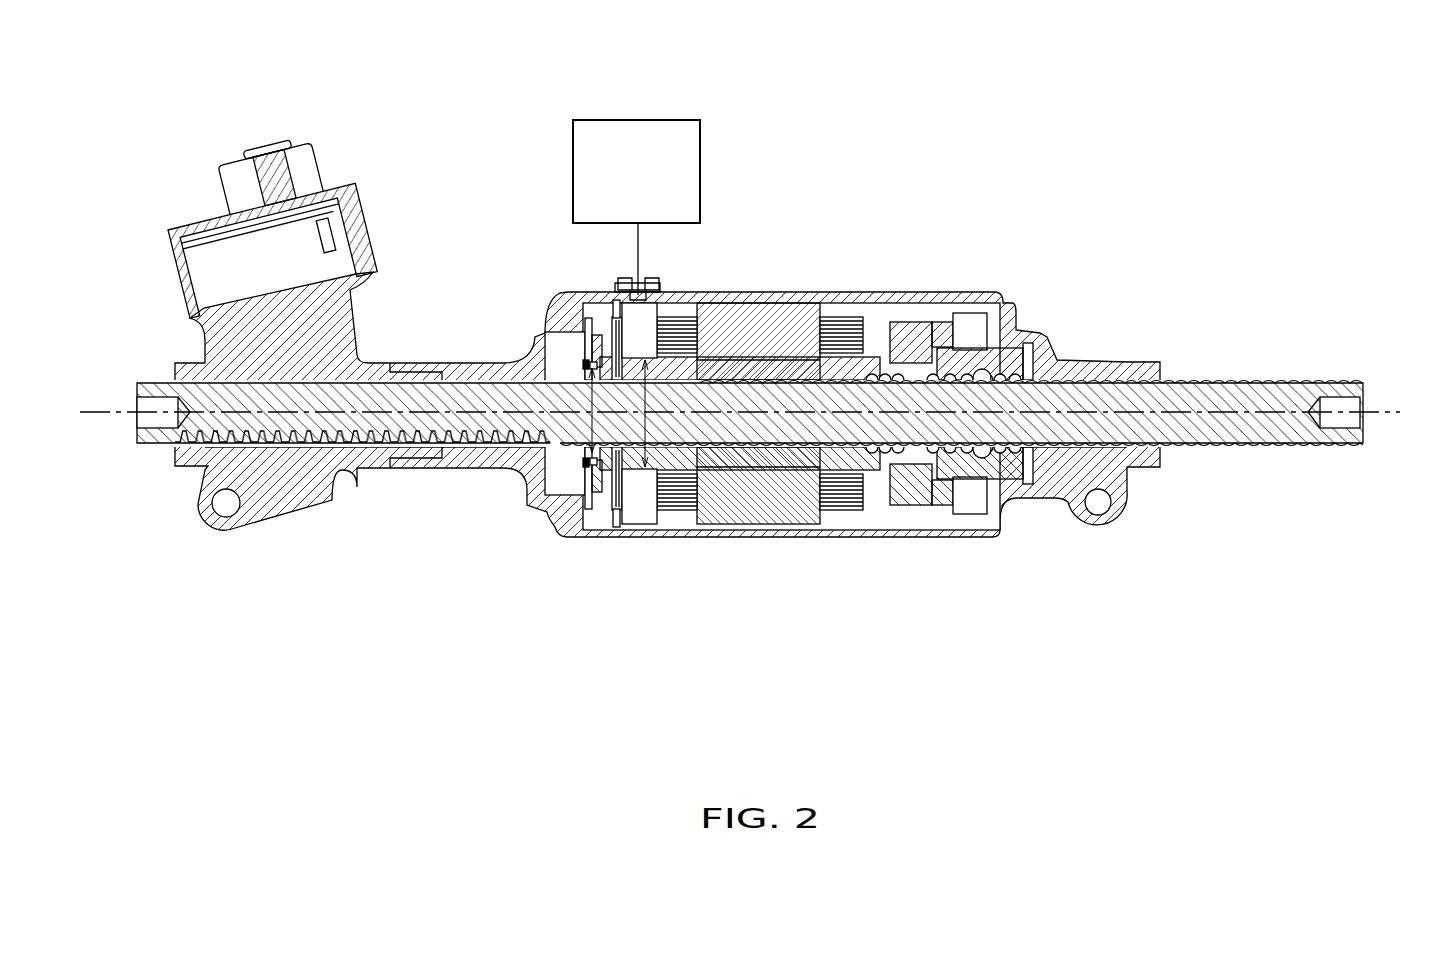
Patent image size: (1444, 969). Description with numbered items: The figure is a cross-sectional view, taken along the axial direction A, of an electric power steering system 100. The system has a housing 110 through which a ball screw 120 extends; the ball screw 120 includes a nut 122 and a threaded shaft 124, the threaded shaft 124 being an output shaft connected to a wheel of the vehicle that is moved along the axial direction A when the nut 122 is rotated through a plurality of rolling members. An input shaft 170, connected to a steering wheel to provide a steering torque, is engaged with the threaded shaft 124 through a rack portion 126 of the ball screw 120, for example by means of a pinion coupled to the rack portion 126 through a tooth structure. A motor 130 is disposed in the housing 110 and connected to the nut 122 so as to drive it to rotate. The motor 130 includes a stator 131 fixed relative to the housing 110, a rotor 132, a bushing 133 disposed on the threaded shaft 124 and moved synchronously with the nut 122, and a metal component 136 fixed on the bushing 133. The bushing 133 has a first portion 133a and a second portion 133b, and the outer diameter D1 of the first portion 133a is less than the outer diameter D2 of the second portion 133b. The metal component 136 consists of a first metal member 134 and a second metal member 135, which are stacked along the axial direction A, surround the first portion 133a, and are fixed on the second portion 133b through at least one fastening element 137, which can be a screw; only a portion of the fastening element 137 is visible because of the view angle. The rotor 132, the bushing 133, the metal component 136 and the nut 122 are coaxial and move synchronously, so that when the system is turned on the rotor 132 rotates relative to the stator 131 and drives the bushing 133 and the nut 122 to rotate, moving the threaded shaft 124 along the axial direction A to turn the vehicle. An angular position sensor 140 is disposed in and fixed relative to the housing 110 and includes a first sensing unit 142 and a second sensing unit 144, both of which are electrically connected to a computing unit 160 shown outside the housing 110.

The electric power steering system 100 is at (1172, 136).
The housing 110 is at (1113, 477).
The ball screw 120 is at (392, 755).
The nut 122 is at (995, 468).
The threaded shaft 124 is at (1272, 400).
The rack portion 126 is at (344, 459).
The motor 130 is at (838, 652).
The stator 131 is at (765, 512).
The rotor 132 is at (778, 466).
The bushing 133 is at (723, 585).
The first portion 133a is at (630, 462).
The second portion 133b is at (682, 462).
The first metal member 134 is at (585, 474).
The second metal member 135 is at (604, 466).
The metal component 136 is at (605, 598).
The fastening element 137 is at (583, 358).
The angular position sensor 140 is at (505, 278).
The first sensing unit 142 is at (598, 318).
The second sensing unit 144 is at (612, 312).
The computing unit 160 is at (702, 160).
The input shaft 170 is at (267, 182).
The axial direction A is at (103, 435).
The outer diameter of the first portion D1 is at (608, 410).
The outer diameter of the second portion D2 is at (661, 413).